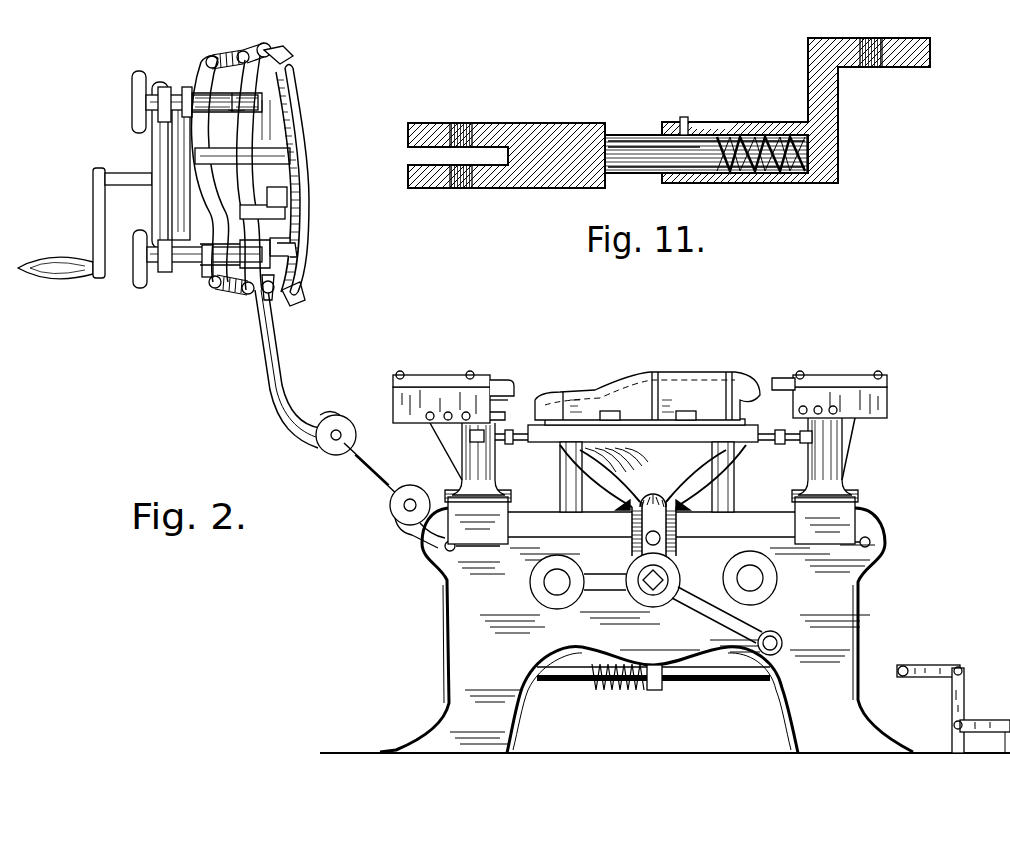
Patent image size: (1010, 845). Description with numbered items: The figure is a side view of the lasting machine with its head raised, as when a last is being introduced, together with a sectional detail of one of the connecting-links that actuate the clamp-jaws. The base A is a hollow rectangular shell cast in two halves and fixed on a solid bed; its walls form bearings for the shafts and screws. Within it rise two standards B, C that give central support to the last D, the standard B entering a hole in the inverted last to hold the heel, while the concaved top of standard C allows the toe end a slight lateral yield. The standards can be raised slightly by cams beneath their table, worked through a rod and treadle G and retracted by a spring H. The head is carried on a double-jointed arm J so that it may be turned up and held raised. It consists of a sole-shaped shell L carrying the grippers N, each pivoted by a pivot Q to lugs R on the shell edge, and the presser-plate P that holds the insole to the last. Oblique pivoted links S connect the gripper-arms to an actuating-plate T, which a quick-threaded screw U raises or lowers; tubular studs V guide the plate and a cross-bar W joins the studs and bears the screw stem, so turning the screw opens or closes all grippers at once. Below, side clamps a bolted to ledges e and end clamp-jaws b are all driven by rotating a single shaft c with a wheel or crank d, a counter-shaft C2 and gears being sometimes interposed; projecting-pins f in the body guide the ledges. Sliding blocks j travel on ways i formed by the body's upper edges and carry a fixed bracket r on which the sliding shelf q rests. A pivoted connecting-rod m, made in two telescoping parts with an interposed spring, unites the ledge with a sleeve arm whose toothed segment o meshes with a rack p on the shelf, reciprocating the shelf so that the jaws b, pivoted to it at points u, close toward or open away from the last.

In FIG. 2, the base A is at (646, 630).
In FIG. 2, the standard B is at (560, 485).
In FIG. 2, the standard C is at (734, 486).
In FIG. 2, the counter-shaft C2 is at (628, 544).
In FIG. 2, the last D is at (650, 458).
In FIG. 2, the rod and treadle G is at (920, 668).
In FIG. 2, the spring H is at (606, 684).
In FIG. 2, the double-jointed arm J is at (278, 375).
In FIG. 2, the shell L is at (258, 234).
In FIG. 2, the grippers N is at (281, 166).
In FIG. 2, the presser-plate P is at (287, 117).
In FIG. 2, the pivot Q is at (270, 298).
In FIG. 2, the lugs R is at (304, 248).
In FIG. 2, the oblique pivoted link S is at (222, 106).
In FIG. 2, the actuating-plate T is at (203, 82).
In FIG. 2, the quick-threaded screw U is at (181, 195).
In FIG. 11, the tubular studs V is at (760, 178).
In FIG. 2, the tubular studs V is at (173, 110).
In FIG. 2, the cross-bar W is at (155, 212).
In FIG. 2, the side clamps a is at (647, 396).
In FIG. 2, the clamp-jaws b is at (505, 383).
In FIG. 2, the shaft c is at (640, 578).
In FIG. 2, the wheel or crank d is at (696, 612).
In FIG. 2, the ledges e is at (620, 482).
In FIG. 2, the projecting-pins f is at (653, 580).
In FIG. 2, the ways i is at (651, 524).
In FIG. 2, the sliding blocks j is at (651, 517).
In FIG. 11, the connecting-rod m is at (838, 141).
In FIG. 2, the connecting-rod m is at (505, 444).
In FIG. 2, the toothed segment o is at (291, 197).
In FIG. 2, the rack p is at (500, 418).
In FIG. 2, the sliding shelf q is at (433, 400).
In FIG. 2, the bracket r is at (502, 404).
In FIG. 11, the pivot points u is at (553, 186).